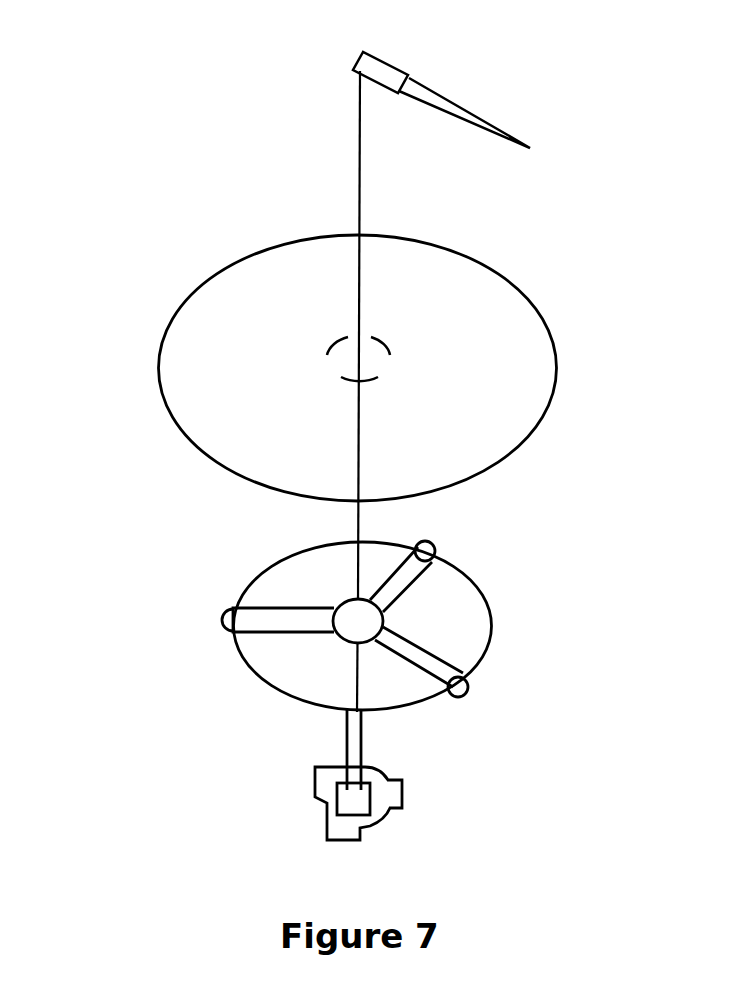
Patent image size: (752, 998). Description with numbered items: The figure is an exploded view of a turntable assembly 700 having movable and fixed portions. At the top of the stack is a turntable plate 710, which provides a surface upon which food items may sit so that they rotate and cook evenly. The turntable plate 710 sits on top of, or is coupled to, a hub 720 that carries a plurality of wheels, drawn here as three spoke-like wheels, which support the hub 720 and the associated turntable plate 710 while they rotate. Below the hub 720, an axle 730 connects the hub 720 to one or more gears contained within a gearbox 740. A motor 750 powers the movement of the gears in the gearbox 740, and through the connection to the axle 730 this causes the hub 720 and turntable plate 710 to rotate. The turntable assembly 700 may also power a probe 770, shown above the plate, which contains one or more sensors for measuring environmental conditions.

The turntable assembly 700 is at (126, 180).
The probe 770 is at (415, 82).
The turntable plate 710 is at (510, 327).
The hub 720 is at (368, 622).
The axle 730 is at (362, 745).
The gearbox 740 is at (355, 800).
The motor 750 is at (372, 818).